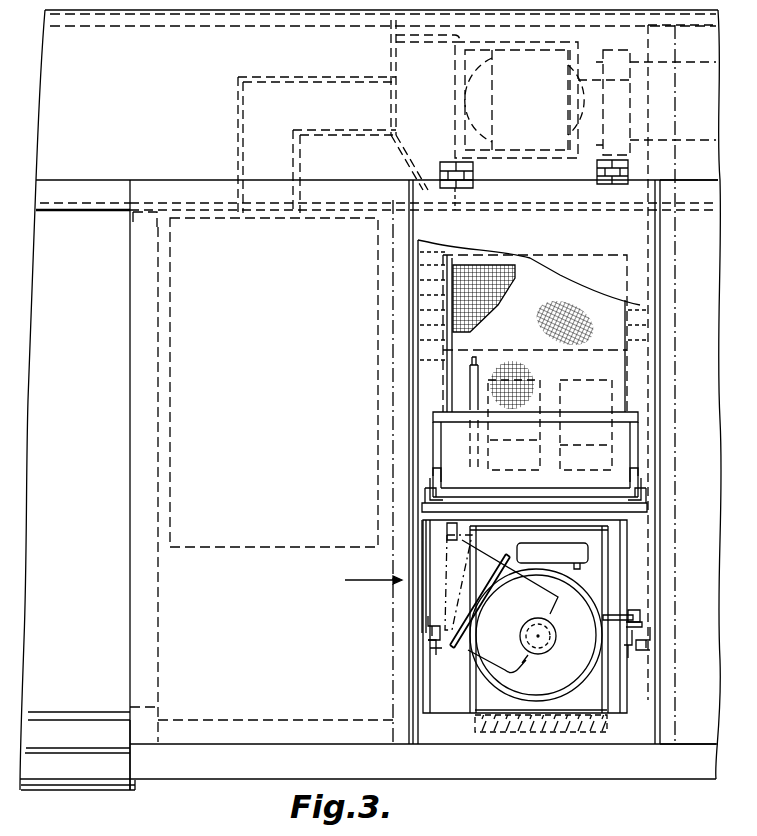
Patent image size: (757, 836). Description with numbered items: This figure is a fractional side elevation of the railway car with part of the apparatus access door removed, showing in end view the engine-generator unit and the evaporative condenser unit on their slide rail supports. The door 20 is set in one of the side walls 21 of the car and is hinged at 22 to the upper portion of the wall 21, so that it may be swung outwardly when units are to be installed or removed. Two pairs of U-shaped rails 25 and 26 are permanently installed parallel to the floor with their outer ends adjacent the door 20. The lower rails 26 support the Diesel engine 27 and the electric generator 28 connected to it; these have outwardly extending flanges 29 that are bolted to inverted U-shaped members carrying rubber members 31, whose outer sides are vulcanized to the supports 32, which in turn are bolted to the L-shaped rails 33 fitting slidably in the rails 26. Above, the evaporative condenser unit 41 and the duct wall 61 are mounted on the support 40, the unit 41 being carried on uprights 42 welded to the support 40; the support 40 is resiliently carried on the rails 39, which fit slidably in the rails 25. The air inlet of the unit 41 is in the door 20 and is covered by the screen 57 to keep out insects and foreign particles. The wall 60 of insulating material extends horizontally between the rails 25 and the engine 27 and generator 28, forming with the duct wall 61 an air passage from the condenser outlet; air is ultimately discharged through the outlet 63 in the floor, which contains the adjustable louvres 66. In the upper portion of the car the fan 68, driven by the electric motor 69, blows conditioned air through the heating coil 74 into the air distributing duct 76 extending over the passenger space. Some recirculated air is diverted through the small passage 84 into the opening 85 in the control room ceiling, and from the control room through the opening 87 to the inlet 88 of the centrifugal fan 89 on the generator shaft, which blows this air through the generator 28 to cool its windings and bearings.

The door 20 is at (534, 462).
The side wall 21 is at (689, 462).
The hinge 22 is at (448, 166).
The U-shaped rails 25 is at (430, 478).
The U-shaped rails 26 is at (428, 642).
The Diesel engine 27 is at (600, 590).
The electric generator 28 is at (572, 590).
The flanges 29 is at (636, 613).
The rubber members 31 is at (640, 616).
The supports 32 is at (642, 622).
The L-shaped rails 33 is at (540, 651).
The rails 39 is at (432, 502).
The support 40 is at (439, 470).
The evaporative condenser unit 41 is at (534, 362).
The uprights 42 is at (433, 433).
The screen 57 is at (452, 291).
The duct wall 61 is at (440, 319).
The wall of insulating material 60 is at (645, 507).
The outlet 63 is at (480, 732).
The louvres 66 is at (558, 735).
The fan 68 is at (498, 62).
The electric motor 69 is at (505, 96).
The heating coil 74 is at (632, 58).
The air distributing duct 76 is at (706, 62).
The passage 84 is at (276, 79).
The opening 85 is at (270, 222).
The opening 87 is at (390, 606).
The inlet 88 is at (420, 558).
The centrifugal fan 89 is at (512, 668).